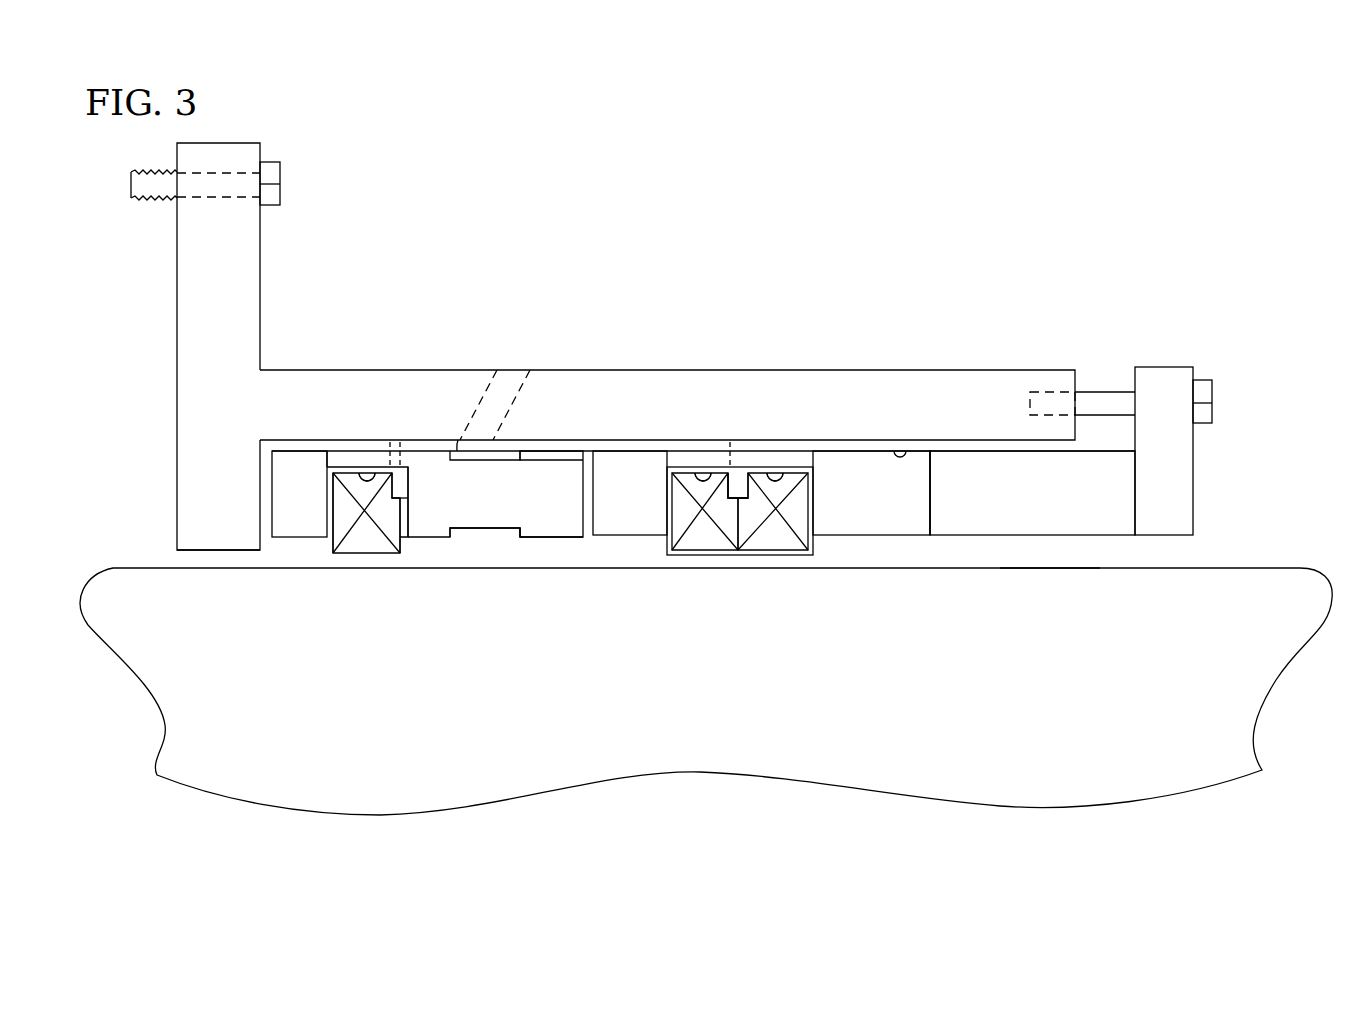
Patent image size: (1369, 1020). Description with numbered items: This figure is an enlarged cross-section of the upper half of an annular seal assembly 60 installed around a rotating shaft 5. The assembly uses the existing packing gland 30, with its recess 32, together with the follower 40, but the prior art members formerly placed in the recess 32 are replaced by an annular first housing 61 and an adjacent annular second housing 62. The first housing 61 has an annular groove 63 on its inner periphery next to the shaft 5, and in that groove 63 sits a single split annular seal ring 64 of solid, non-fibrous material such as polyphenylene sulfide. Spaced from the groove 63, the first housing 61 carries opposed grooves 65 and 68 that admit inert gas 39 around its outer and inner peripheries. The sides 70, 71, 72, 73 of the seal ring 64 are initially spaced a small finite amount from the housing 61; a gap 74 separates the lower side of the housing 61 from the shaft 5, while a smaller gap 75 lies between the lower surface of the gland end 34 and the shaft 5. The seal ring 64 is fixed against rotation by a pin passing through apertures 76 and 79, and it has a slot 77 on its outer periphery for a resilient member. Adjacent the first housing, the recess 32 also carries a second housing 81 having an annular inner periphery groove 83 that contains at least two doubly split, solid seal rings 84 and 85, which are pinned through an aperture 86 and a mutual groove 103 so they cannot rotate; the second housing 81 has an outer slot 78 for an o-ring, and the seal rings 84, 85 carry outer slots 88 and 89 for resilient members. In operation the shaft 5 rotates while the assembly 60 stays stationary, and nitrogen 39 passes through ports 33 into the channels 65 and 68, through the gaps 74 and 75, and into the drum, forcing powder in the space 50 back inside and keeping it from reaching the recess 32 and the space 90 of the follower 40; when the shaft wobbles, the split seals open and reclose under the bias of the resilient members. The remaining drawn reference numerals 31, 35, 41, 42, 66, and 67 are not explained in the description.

The shaft 5 is at (1291, 567).
The packing gland 30 is at (290, 368).
The fastener 31 is at (285, 162).
The recess 32 is at (567, 555).
The ports 33 is at (518, 401).
The end 34 is at (177, 500).
The base surface 35 is at (1048, 568).
The inert gas 39 is at (524, 352).
The follower 40 is at (1197, 452).
The fastener 41 is at (1095, 390).
The plate 42 is at (945, 500).
The space 50 is at (163, 557).
The annular seal assembly 60 is at (520, 282).
The annular first housing 61 is at (570, 462).
The annular second housing 62 is at (865, 520).
The annular groove 63 is at (407, 548).
The split annular seal ring 64 is at (360, 548).
The groove 65 is at (477, 548).
The slot 66 is at (553, 451).
The groove 67 is at (545, 548).
The groove 68 is at (457, 440).
The side 70 is at (372, 553).
The side 71 is at (330, 493).
The side 72 is at (350, 467).
The side 73 is at (405, 505).
The gap 74 is at (296, 548).
The gap 75 is at (225, 568).
The aperture 76 is at (400, 444).
The slot 77 is at (365, 467).
The slot 78 is at (900, 445).
The aperture 79 is at (402, 475).
The second housing 81 is at (915, 472).
The annular inner periphery groove 83 is at (670, 550).
The annular seal ring 84 is at (703, 523).
The annular seal ring 85 is at (775, 523).
The aperture 86 is at (742, 462).
The slot 88 is at (700, 473).
The slot 89 is at (778, 473).
The space 90 is at (1244, 532).
The groove 103 is at (740, 487).